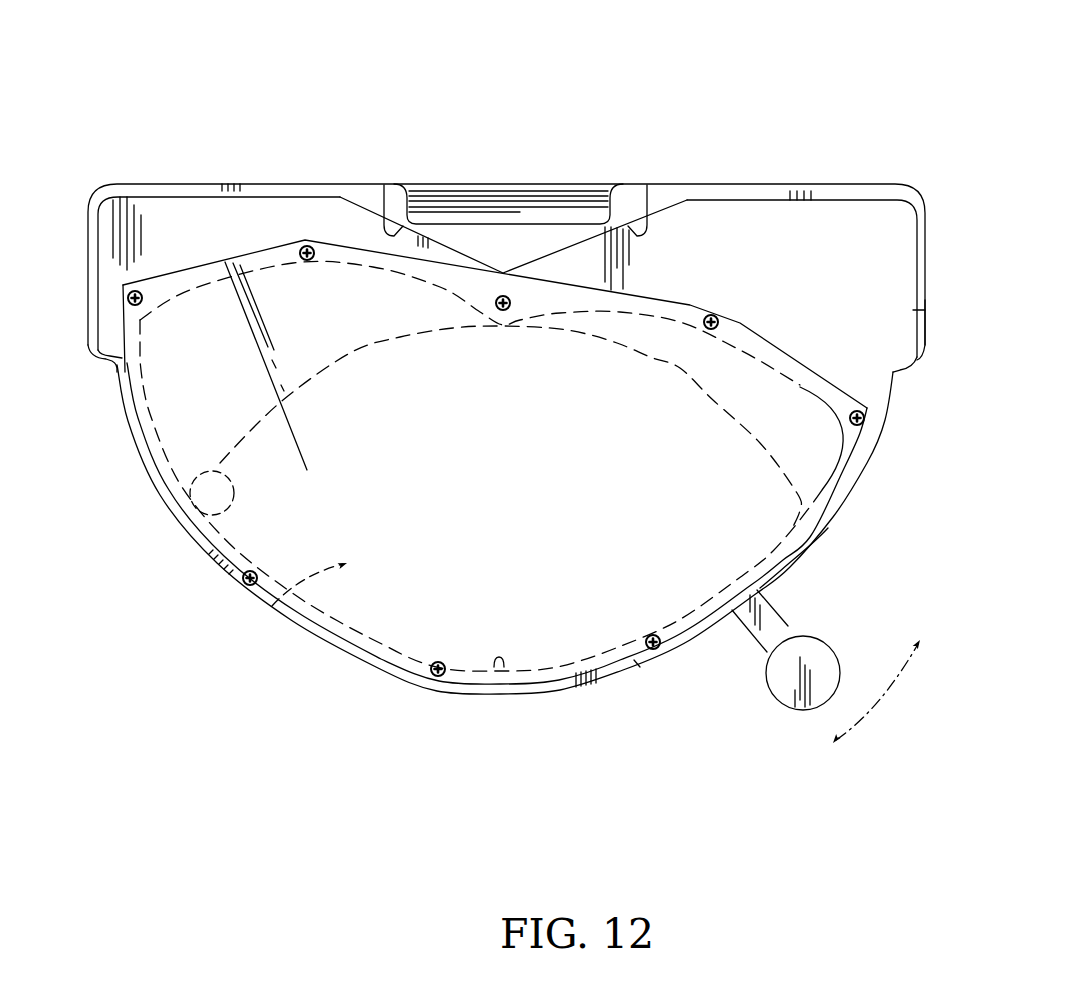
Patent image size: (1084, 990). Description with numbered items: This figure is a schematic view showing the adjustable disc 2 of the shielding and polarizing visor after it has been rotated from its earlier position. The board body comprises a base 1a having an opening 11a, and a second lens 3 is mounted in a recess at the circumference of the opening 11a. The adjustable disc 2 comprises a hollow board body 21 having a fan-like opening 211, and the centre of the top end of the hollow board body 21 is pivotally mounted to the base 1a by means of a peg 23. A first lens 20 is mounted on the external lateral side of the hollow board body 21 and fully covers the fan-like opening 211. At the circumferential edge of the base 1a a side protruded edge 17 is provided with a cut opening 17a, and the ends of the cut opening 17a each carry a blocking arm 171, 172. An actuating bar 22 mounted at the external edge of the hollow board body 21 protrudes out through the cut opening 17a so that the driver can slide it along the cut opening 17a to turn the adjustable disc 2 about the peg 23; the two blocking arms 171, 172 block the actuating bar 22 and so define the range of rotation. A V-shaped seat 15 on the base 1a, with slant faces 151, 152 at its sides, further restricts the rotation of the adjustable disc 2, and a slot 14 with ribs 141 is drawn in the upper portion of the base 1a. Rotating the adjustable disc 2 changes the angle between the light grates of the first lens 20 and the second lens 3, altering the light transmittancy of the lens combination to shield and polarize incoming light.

The base 1a is at (318, 185).
The adjustable disc 2 is at (743, 318).
The second lens 3 is at (272, 608).
The opening 11a is at (499, 692).
The slot 14 is at (426, 212).
The slot ribs 141 is at (505, 195).
The V-shaped seat 15 is at (543, 243).
The slant face 151 is at (650, 222).
The slant face 152 is at (386, 224).
The side protruded edge 17 is at (558, 687).
The cut opening 17a is at (790, 567).
The blocking arm 171 is at (917, 362).
The blocking arm 172 is at (645, 662).
The first lens 20 is at (383, 627).
The hollow board body 21 is at (290, 250).
The fan-like opening 211 is at (197, 533).
The actuating bar 22 is at (783, 690).
The peg 23 is at (505, 296).